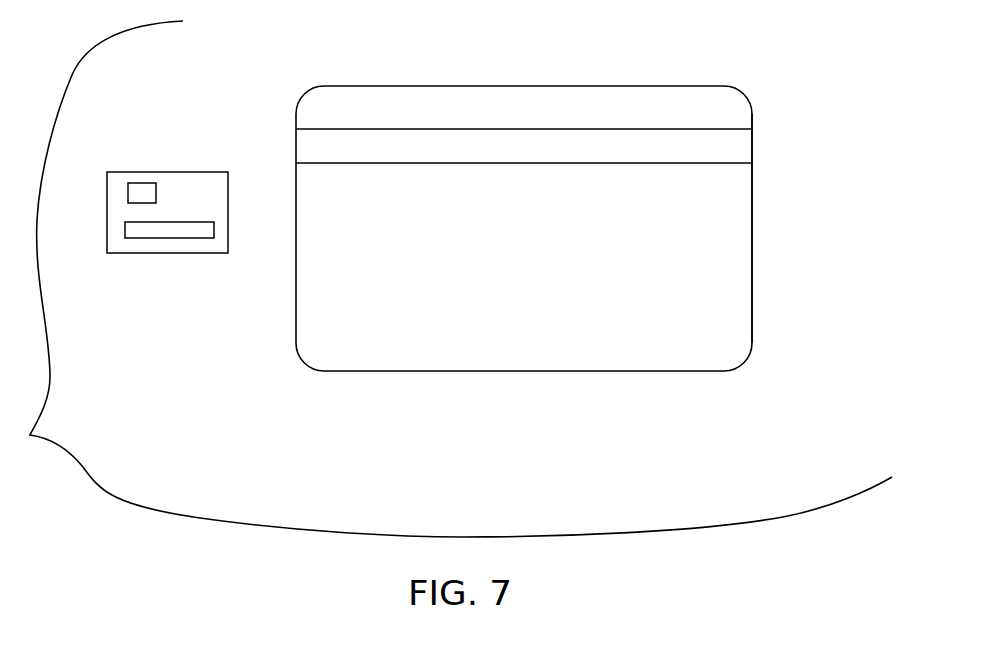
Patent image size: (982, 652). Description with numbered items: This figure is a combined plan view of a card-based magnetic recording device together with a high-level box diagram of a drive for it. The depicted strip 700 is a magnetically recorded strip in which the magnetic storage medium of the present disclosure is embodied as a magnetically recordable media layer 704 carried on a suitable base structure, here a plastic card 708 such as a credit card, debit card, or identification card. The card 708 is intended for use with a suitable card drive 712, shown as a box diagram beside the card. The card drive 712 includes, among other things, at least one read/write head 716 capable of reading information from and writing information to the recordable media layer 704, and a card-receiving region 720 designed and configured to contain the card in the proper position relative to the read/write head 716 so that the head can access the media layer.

The magnetically recorded strip 700 is at (572, 207).
The magnetically recordable media layer 704 is at (590, 140).
The plastic card 708 is at (752, 255).
The card drive 712 is at (160, 244).
The read/write head 716 is at (143, 188).
The card-receiving region 720 is at (128, 255).